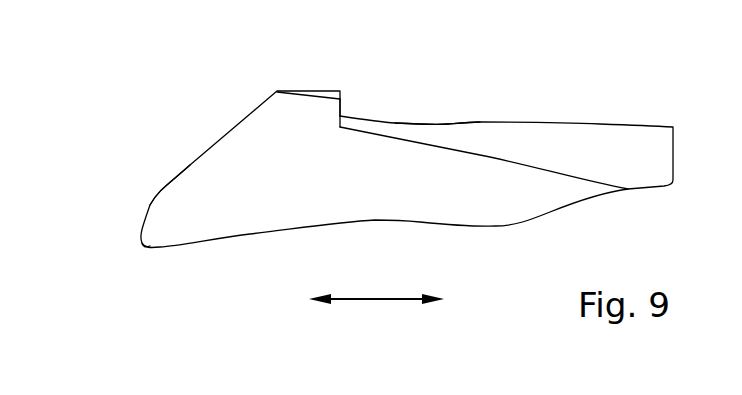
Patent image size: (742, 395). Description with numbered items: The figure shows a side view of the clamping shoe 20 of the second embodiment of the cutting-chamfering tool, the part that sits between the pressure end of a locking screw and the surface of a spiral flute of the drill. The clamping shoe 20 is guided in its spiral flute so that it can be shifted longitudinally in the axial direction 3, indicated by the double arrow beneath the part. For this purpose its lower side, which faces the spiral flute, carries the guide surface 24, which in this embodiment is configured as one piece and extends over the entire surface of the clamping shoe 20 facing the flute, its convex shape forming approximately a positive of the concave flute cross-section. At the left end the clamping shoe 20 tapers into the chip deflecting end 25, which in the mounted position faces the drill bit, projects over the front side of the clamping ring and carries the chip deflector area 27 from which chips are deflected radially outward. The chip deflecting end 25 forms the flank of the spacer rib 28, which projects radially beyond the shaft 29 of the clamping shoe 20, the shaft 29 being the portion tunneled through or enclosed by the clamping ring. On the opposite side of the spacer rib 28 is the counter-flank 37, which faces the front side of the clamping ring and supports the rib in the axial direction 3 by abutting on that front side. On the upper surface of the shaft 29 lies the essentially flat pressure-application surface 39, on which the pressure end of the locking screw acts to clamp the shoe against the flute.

The clamping shoe 20 is at (296, 243).
The guide surface 24 is at (415, 188).
The chip deflecting end 25 is at (132, 253).
The chip deflector area 27 is at (160, 192).
The spacer rib 28 is at (325, 91).
The shaft 29 is at (448, 118).
The counter-flank 37 is at (343, 104).
The pressure-application surface 39 is at (427, 122).
The axial direction 3 is at (366, 300).